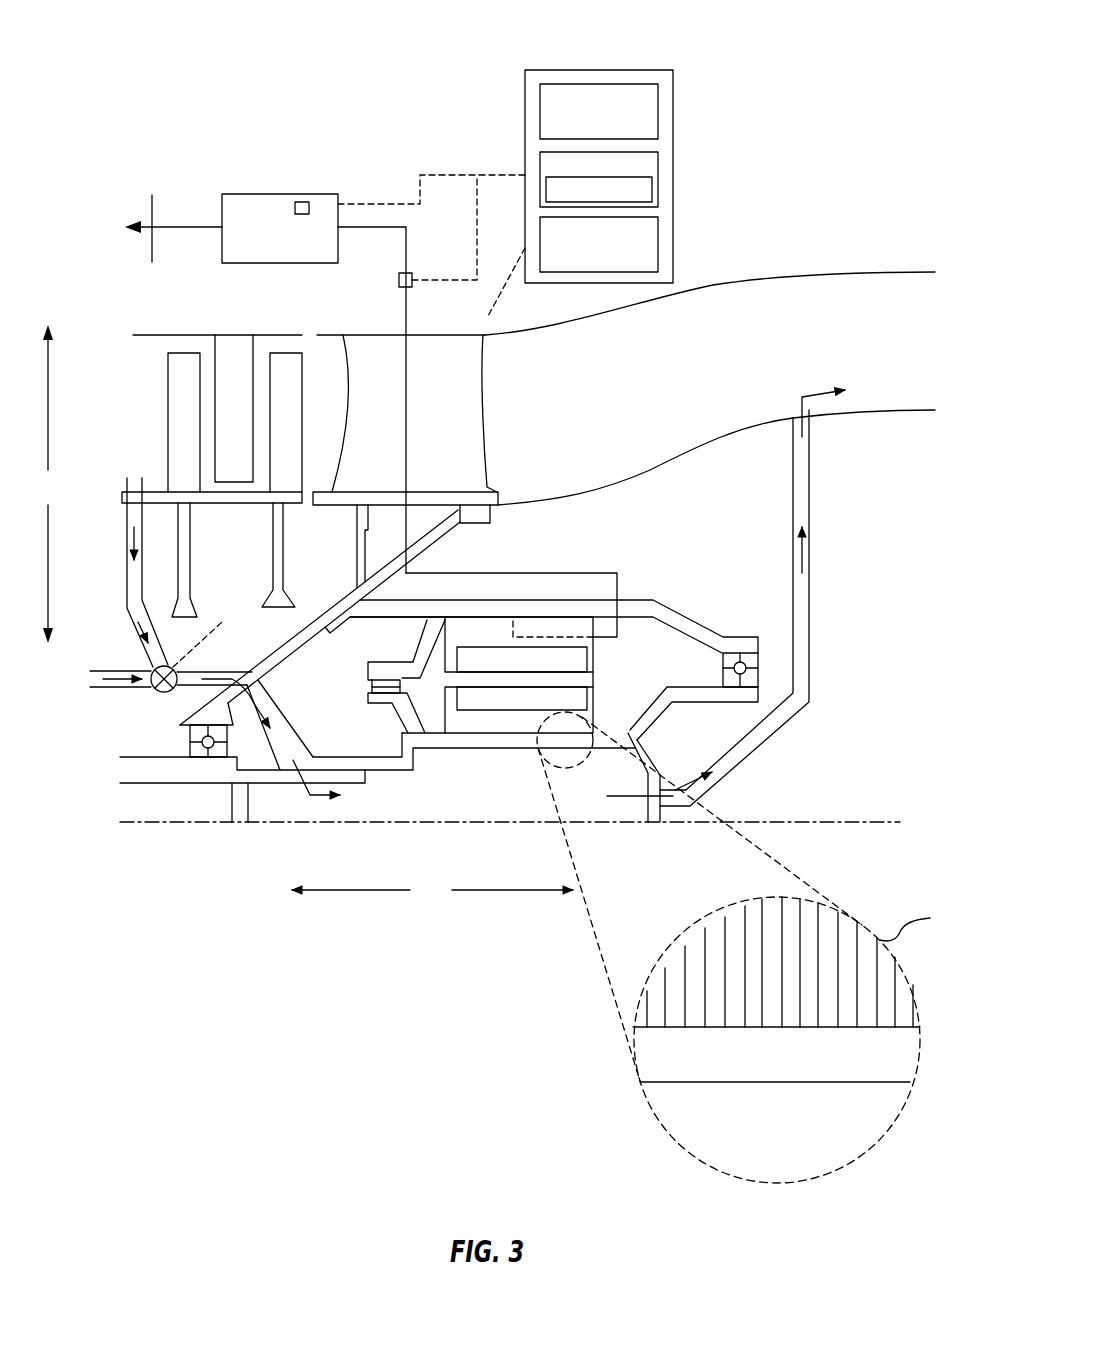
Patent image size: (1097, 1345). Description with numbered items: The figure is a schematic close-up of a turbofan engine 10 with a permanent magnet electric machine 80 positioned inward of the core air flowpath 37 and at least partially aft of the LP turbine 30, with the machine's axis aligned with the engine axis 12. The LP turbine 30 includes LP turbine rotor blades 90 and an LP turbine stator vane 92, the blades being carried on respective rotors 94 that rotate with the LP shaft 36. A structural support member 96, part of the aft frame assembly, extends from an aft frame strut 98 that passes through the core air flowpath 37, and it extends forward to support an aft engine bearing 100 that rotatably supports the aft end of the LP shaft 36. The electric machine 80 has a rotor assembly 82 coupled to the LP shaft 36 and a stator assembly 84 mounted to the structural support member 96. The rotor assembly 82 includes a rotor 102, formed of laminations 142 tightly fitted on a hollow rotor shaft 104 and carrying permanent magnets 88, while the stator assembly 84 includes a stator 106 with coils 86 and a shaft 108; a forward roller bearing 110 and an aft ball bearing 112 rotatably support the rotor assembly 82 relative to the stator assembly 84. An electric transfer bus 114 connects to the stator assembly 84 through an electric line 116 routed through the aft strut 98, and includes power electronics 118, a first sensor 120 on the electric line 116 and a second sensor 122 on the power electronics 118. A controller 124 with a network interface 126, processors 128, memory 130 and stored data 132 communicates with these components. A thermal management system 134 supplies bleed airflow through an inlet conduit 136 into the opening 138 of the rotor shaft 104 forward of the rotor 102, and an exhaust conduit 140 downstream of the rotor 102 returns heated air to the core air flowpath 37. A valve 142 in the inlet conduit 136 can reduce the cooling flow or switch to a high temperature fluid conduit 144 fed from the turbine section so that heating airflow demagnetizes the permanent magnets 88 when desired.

The turbofan engine 10 is at (862, 146).
The axis 12 is at (830, 815).
The LP turbine 30 is at (150, 312).
The LP shaft 36 is at (150, 785).
The core air flowpath 37 is at (155, 450).
The permanent magnet electric machine 80 is at (720, 587).
The rotor assembly 82 is at (655, 728).
The stator assembly 84 is at (657, 580).
The coils 86 is at (497, 658).
The permanent magnets 88 is at (498, 700).
The LP turbine rotor blades 90 is at (177, 390).
The LP turbine stator vanes 92 is at (238, 347).
The rotor 94 is at (185, 560).
The structural support member 96 is at (337, 604).
The aft frame strut 98 is at (482, 385).
The aft engine bearing 100 is at (190, 738).
The rotor 102 is at (463, 725).
The rotor shaft 104 is at (505, 743).
The stator 106 is at (513, 635).
The shaft 108 is at (627, 607).
The forward roller bearing 110 is at (370, 680).
The aft ball bearing 112 is at (752, 663).
The electric transfer bus 114 is at (385, 174).
The electric line 116 is at (406, 322).
The power electronics 118 is at (248, 194).
The first sensor 120 is at (399, 280).
The second sensor 122 is at (300, 202).
The controller 124 is at (628, 70).
The network interface 126 is at (658, 246).
The processors 128 is at (658, 112).
The memory 130 is at (658, 168).
The data 132 is at (652, 190).
The thermal management system 134 is at (140, 722).
The inlet conduit 136 is at (217, 668).
The opening 138 is at (418, 800).
The exhaust conduit 140 is at (810, 582).
The valve 142 is at (162, 692).
The high temperature fluid conduit 144 is at (127, 570).